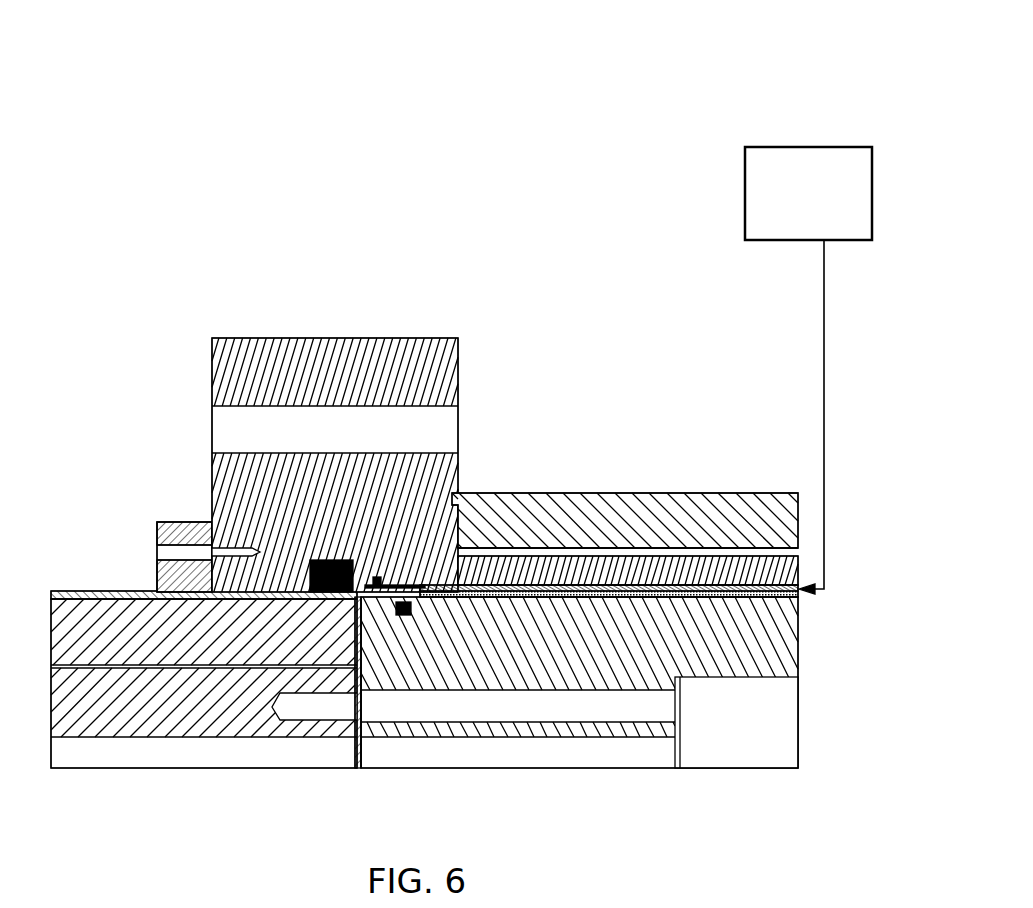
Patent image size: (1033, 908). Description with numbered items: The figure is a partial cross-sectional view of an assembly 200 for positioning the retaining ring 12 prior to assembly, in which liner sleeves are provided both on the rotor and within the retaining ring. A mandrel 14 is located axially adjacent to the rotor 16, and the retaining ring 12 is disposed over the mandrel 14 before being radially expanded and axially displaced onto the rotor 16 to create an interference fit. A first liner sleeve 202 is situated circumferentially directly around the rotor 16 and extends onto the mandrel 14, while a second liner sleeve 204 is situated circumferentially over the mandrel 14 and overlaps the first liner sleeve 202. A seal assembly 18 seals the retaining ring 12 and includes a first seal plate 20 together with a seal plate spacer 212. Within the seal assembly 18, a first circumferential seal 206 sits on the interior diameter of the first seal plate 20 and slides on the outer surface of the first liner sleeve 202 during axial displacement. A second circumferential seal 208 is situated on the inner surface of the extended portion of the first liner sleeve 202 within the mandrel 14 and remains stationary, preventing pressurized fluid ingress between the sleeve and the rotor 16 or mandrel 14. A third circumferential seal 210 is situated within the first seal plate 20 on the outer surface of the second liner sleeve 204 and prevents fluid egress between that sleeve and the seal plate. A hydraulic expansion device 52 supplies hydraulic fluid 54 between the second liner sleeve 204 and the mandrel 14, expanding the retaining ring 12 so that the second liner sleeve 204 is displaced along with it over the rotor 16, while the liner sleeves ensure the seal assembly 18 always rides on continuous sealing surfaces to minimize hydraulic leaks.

The assembly 200 is at (200, 69).
The seal assembly 18 is at (806, 329).
The first seal plate 20 is at (458, 378).
The hydraulic expansion device 52 is at (745, 185).
The first circumferential seal 206 is at (320, 560).
The first liner sleeve 202 is at (77, 592).
The rotor 16 is at (53, 640).
The third circumferential seal 210 is at (378, 578).
The seal plate spacer 212 is at (618, 500).
The second liner sleeve 204 is at (707, 590).
The retaining ring 12 is at (752, 573).
The hydraulic fluid 54 is at (792, 600).
The mandrel 14 is at (790, 638).
The second circumferential seal 208 is at (412, 612).